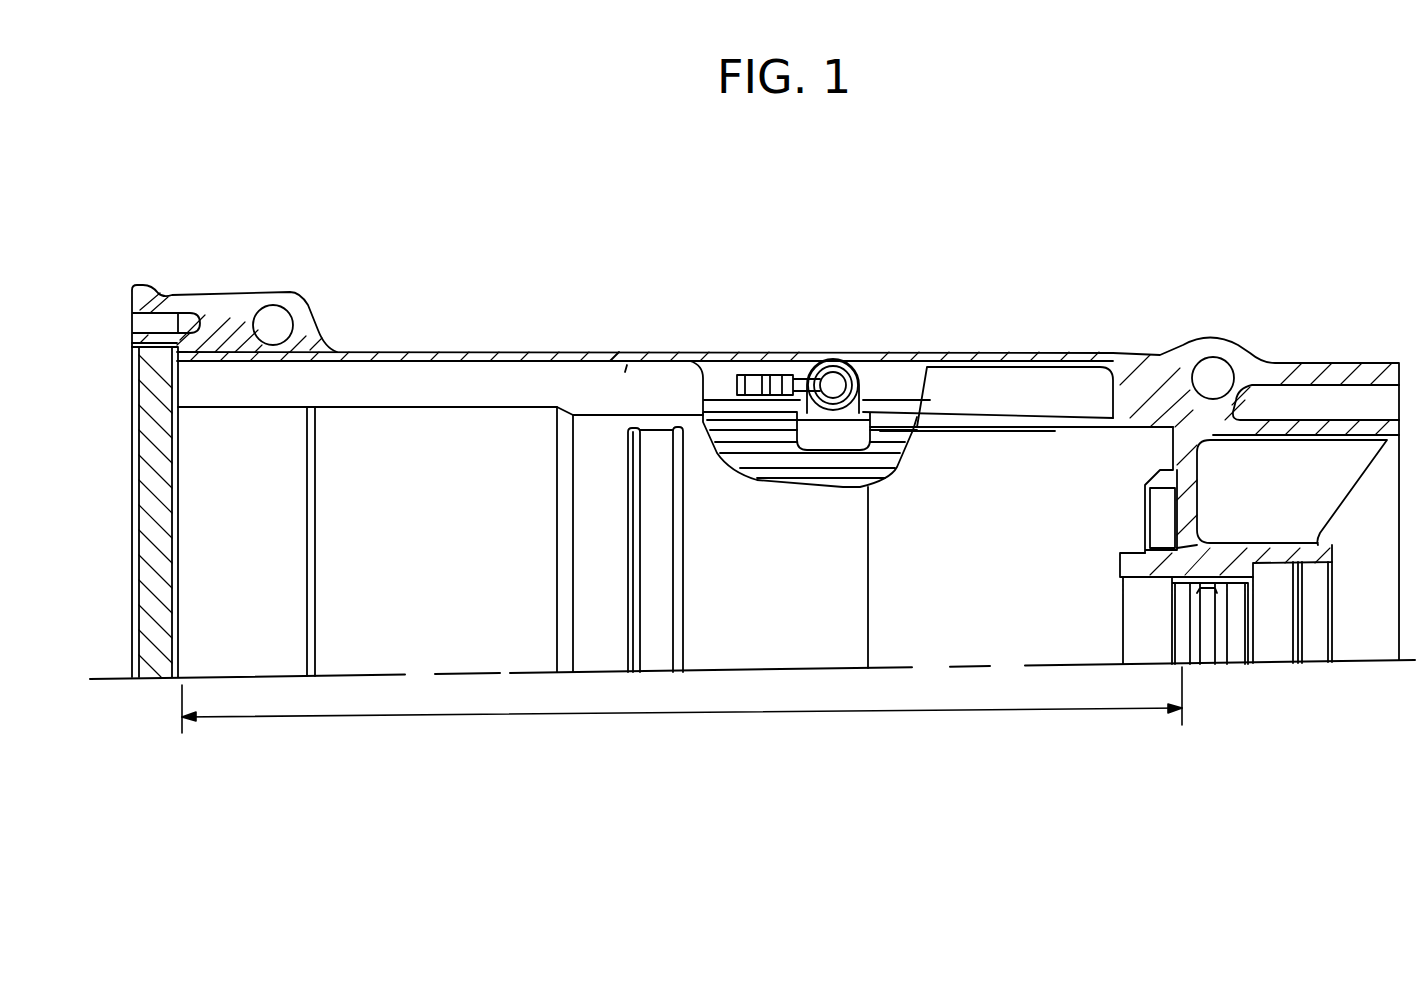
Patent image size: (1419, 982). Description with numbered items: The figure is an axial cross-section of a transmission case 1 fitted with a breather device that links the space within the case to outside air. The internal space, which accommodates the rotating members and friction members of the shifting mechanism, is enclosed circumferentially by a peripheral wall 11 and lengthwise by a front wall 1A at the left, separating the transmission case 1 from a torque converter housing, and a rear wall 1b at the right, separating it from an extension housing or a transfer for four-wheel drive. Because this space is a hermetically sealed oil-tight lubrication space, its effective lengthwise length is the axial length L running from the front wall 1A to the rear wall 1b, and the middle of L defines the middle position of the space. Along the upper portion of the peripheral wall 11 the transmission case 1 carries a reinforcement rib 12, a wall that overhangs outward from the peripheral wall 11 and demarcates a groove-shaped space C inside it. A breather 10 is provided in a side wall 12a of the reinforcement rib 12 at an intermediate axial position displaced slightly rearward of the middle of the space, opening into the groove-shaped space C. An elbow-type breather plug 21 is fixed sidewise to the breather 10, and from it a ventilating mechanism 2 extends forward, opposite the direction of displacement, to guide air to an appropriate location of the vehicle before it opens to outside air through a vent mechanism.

The transmission case 1 is at (509, 352).
The front wall 1A is at (167, 517).
The rear wall 1b is at (1177, 462).
The groove-shaped space C is at (617, 352).
The ventilating mechanism 2 is at (770, 373).
The breather 10 is at (843, 352).
The peripheral wall 11 is at (917, 437).
The reinforcement rib 12 is at (663, 352).
The side wall 12a is at (905, 380).
The elbow-type breather plug 21 is at (783, 413).
The effective lengthwise direction length L is at (682, 717).